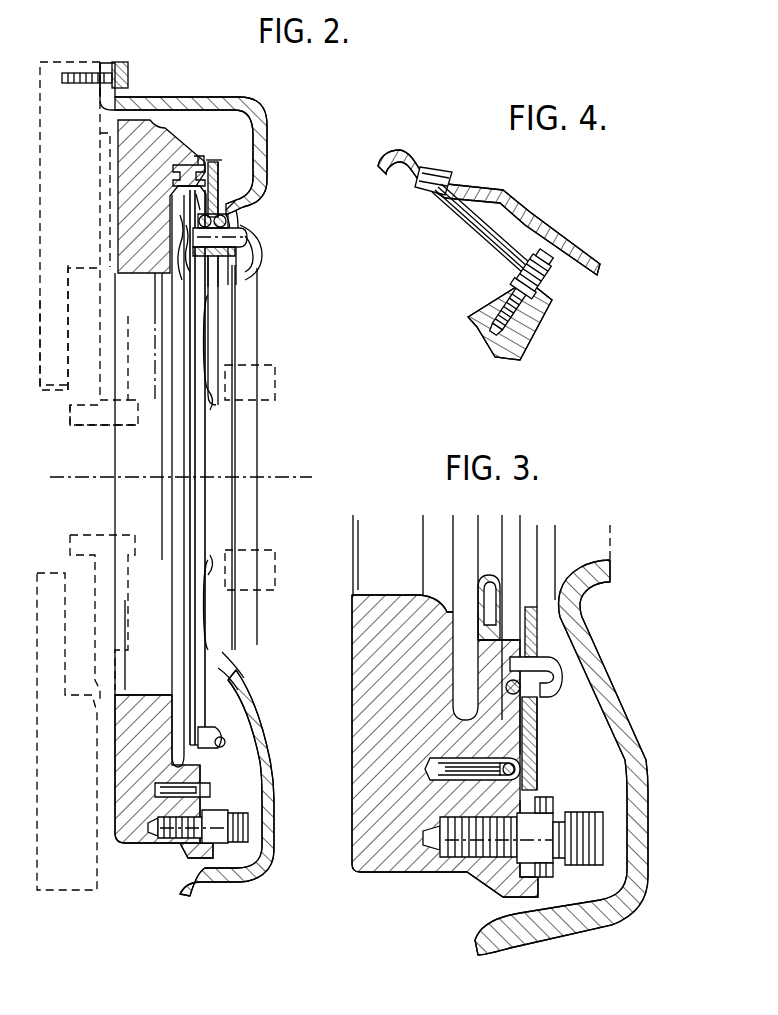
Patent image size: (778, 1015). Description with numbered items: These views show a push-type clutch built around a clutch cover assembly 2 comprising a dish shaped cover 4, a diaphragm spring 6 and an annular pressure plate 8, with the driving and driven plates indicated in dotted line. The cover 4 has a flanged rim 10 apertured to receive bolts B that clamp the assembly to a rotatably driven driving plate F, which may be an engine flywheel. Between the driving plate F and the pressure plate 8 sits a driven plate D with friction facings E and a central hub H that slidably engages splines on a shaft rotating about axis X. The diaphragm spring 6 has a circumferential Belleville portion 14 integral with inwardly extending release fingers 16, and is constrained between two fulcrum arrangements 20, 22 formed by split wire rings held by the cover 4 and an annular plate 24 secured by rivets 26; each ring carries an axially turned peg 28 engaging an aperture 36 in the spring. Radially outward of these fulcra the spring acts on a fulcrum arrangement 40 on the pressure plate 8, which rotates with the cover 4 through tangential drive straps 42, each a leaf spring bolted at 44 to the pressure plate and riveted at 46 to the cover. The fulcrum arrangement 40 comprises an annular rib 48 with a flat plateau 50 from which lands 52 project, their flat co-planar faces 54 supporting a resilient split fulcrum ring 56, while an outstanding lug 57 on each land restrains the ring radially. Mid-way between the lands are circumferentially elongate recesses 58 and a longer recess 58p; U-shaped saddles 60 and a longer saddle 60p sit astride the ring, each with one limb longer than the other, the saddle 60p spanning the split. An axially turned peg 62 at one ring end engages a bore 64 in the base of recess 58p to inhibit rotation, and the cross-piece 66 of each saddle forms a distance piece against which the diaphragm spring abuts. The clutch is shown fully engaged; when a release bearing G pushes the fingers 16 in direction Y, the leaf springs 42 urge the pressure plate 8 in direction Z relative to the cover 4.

In FIG. 2, the clutch cover assembly 2 is at (262, 98).
In FIG. 3, the clutch cover assembly 2 is at (600, 938).
In FIG. 2, the dish shaped cover 4 is at (268, 736).
In FIG. 4, the dish shaped cover 4 is at (534, 198).
In FIG. 3, the dish shaped cover 4 is at (611, 667).
In FIG. 2, the diaphragm spring 6 is at (222, 172).
In FIG. 3, the diaphragm spring 6 is at (547, 714).
In FIG. 2, the annular pressure plate 8 is at (132, 846).
In FIG. 4, the annular pressure plate 8 is at (542, 336).
In FIG. 3, the annular pressure plate 8 is at (376, 823).
In FIG. 2, the flanged rim 10 is at (108, 64).
In FIG. 2, the Belleville portion 14 is at (220, 161).
In FIG. 3, the Belleville portion 14 is at (540, 755).
In FIG. 2, the release levers or fingers 16 is at (216, 321).
In FIG. 2, the fulcrum arrangement 20 is at (247, 243).
In FIG. 3, the fulcrum arrangement 20 is at (552, 682).
In FIG. 2, the fulcrum arrangement 22 is at (200, 742).
In FIG. 3, the fulcrum arrangement 22 is at (507, 680).
In FIG. 2, the annular plate 24 is at (188, 695).
In FIG. 3, the annular plate 24 is at (485, 590).
In FIG. 2, the rivets 26 is at (253, 258).
In FIG. 2, the axially turned peg 28 is at (216, 734).
In FIG. 3, the axially turned peg 28 is at (528, 605).
In FIG. 2, the aperture 36 is at (212, 706).
In FIG. 3, the aperture 36 is at (545, 633).
In FIG. 2, the fulcrum arrangement 40 is at (199, 152).
In FIG. 3, the fulcrum arrangement 40 is at (510, 790).
In FIG. 2, the tangential drive straps 42 is at (216, 814).
In FIG. 4, the tangential drive straps 42 is at (484, 246).
In FIG. 3, the tangential drive straps 42 is at (552, 794).
In FIG. 2, the bolted end 44 is at (236, 845).
In FIG. 4, the bolted end 44 is at (556, 272).
In FIG. 3, the bolted end 44 is at (587, 852).
In FIG. 4, the riveted end 46 is at (440, 175).
In FIG. 2, the annular rib 48 is at (166, 100).
In FIG. 3, the annular rib 48 is at (482, 740).
In FIG. 2, the flat plateau 50 is at (184, 182).
In FIG. 3, the flat plateau 50 is at (500, 757).
In FIG. 2, the lands 52 is at (185, 192).
In FIG. 2, the flat co-planar faces 54 is at (240, 207).
In FIG. 3, the flat co-planar faces 54 is at (525, 744).
In FIG. 2, the split fulcrum ring 56 is at (250, 192).
In FIG. 3, the split fulcrum ring 56 is at (432, 848).
In FIG. 2, the outstanding lug 57 is at (222, 155).
In FIG. 2, the recesses 58 is at (178, 172).
In FIG. 2, the recess 58p is at (170, 788).
In FIG. 3, the recess 58p is at (480, 751).
In FIG. 2, the saddles 60 is at (192, 163).
In FIG. 3, the saddle 60p is at (446, 860).
In FIG. 3, the axially turned peg 62 is at (472, 776).
In FIG. 3, the bore 64 is at (462, 769).
In FIG. 3, the cross-piece 66 is at (522, 766).
In FIG. 2, the bolts B is at (126, 62).
In FIG. 2, the driven plate D is at (96, 326).
In FIG. 2, the friction facings E is at (104, 188).
In FIG. 2, the driving plate F is at (44, 129).
In FIG. 2, the release bearing G is at (268, 381).
In FIG. 2, the central hub H is at (72, 414).
In FIG. 2, the axis X is at (303, 477).
In FIG. 2, the direction Y is at (264, 432).
In FIG. 2, the direction Z is at (262, 515).